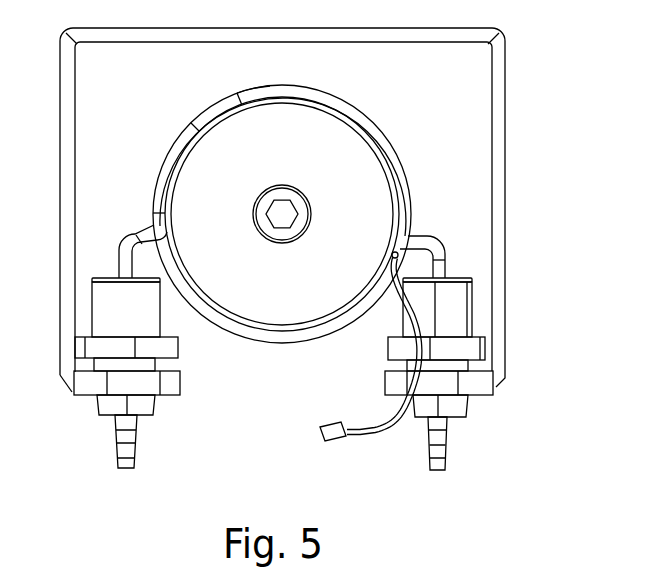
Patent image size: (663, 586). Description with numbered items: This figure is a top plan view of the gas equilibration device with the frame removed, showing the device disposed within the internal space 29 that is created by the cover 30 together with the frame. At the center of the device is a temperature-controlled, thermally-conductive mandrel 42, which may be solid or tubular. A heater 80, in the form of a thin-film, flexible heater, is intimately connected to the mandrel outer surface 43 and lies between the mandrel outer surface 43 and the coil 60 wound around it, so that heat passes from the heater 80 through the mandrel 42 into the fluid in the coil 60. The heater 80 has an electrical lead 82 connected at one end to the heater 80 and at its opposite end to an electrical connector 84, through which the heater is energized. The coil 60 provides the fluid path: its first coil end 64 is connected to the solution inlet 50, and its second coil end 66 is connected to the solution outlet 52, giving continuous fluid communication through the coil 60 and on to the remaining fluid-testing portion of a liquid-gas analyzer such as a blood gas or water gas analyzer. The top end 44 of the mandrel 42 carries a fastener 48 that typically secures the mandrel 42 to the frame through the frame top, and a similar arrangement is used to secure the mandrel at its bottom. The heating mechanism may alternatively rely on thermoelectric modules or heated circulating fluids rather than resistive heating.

The internal space 29 is at (468, 103).
The cover 30 is at (300, 28).
The temperature-controlled, thermally-conductive mandrel 42 is at (197, 130).
The mandrel outer surface 43 is at (241, 102).
The top end 44 is at (360, 160).
The fastener 48 is at (282, 185).
The solution inlet 50 is at (438, 473).
The solution outlet 52 is at (123, 472).
The coil 60 is at (165, 165).
The first coil end 64 is at (443, 272).
The second coil end 66 is at (119, 272).
The heater 80 is at (402, 218).
The electrical lead 82 is at (395, 420).
The electrical connector 84 is at (318, 427).